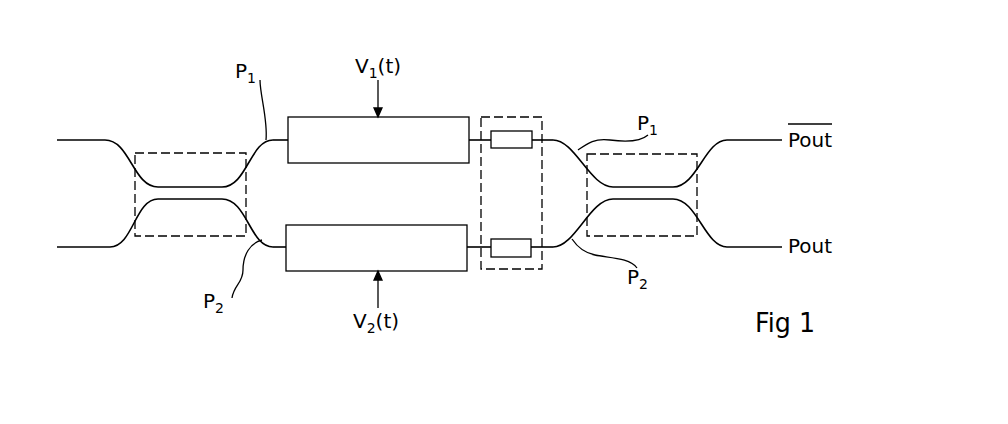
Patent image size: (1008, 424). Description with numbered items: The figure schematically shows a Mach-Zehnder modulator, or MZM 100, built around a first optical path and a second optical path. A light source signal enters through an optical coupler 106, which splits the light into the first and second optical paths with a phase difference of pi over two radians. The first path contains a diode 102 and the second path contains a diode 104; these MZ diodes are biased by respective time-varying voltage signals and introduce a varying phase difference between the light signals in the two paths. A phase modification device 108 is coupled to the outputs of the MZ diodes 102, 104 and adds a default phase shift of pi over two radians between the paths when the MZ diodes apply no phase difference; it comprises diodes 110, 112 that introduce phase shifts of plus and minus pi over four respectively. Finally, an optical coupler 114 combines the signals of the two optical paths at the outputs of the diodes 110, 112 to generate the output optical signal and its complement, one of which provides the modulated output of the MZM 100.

The Mach-Zehnder modulator 100 is at (724, 42).
The diode 102 is at (446, 123).
The diode 104 is at (442, 260).
The optical coupler 106 is at (180, 152).
The phase modification device 108 is at (522, 117).
The diode 110 is at (520, 138).
The diode 112 is at (517, 250).
The optical coupler 114 is at (683, 154).